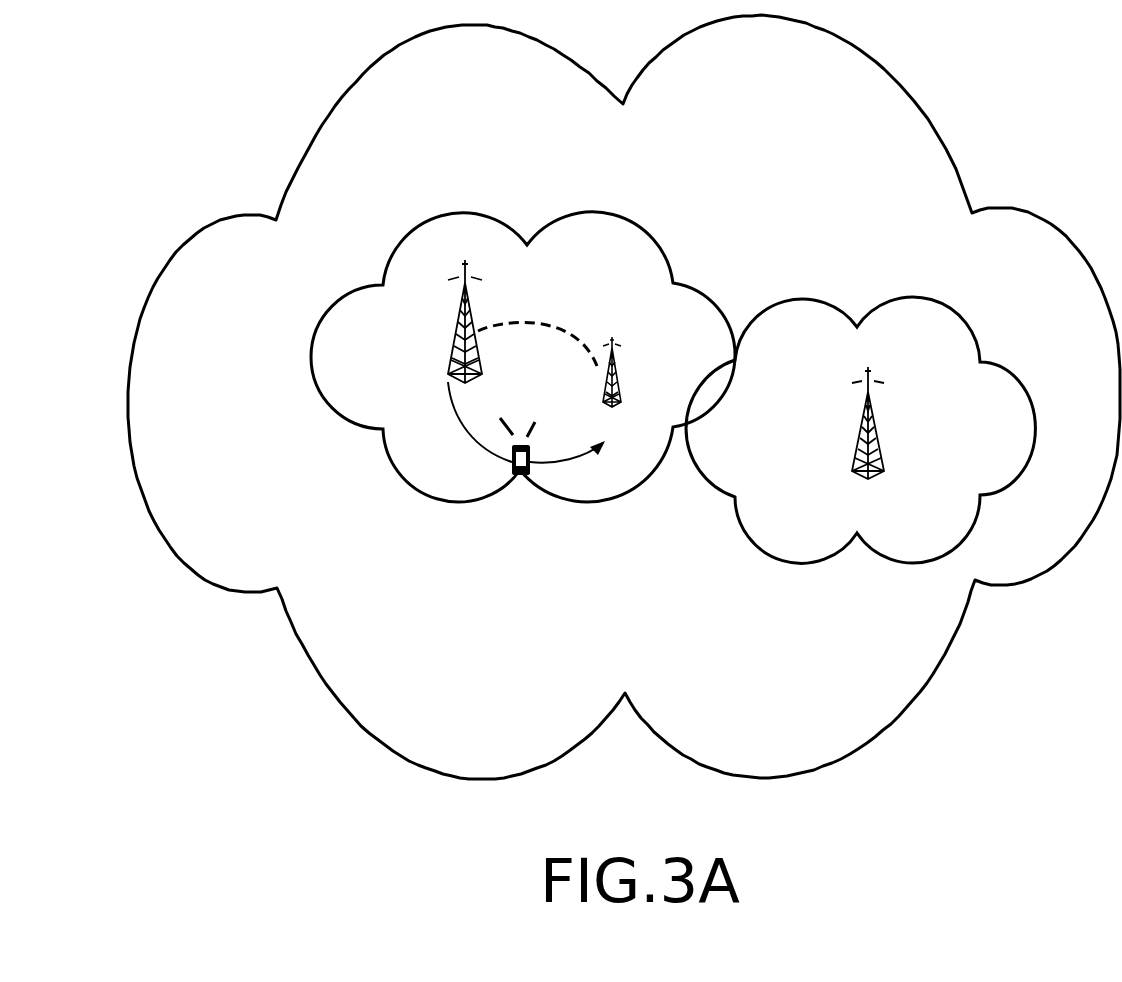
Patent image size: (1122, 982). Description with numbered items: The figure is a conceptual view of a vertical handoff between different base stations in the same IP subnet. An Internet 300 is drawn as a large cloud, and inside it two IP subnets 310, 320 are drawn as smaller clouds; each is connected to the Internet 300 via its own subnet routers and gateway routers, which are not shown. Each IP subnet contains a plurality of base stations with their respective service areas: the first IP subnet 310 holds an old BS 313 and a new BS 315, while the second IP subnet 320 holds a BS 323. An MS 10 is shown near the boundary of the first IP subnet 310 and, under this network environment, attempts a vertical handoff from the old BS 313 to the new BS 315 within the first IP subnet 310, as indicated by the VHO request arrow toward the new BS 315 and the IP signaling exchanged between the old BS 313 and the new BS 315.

The Internet 300 is at (624, 397).
The first IP subnet 310 is at (547, 375).
The IP subnet 320 is at (868, 428).
The old BS 313 is at (426, 338).
The new BS 315 is at (641, 372).
The BS 323 is at (803, 439).
The MS 10 is at (522, 477).